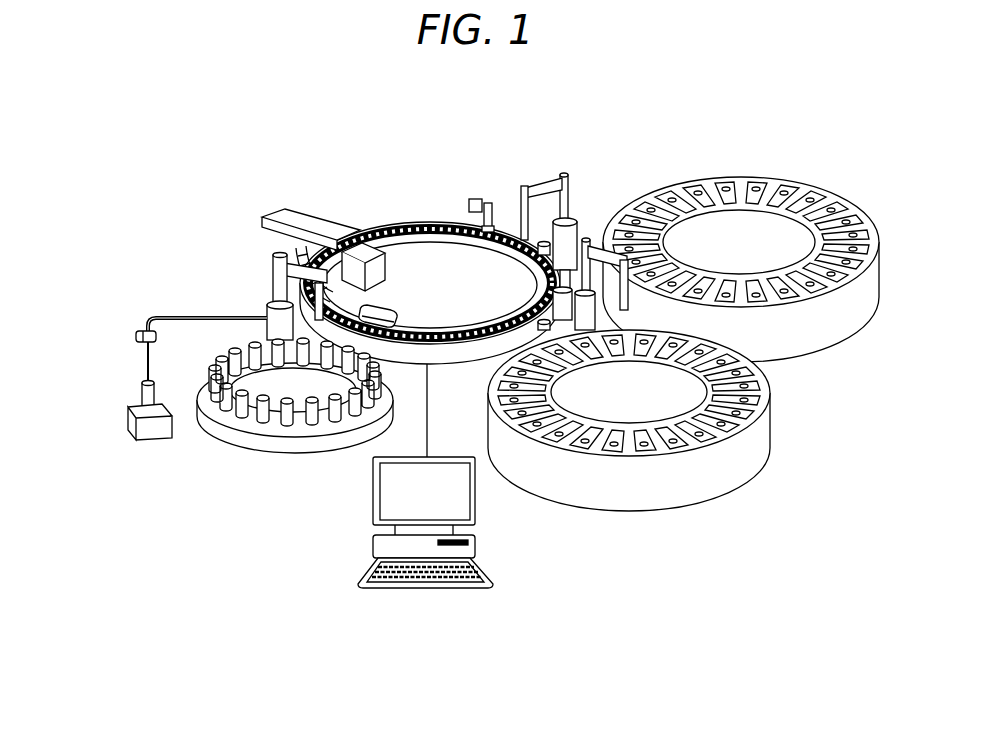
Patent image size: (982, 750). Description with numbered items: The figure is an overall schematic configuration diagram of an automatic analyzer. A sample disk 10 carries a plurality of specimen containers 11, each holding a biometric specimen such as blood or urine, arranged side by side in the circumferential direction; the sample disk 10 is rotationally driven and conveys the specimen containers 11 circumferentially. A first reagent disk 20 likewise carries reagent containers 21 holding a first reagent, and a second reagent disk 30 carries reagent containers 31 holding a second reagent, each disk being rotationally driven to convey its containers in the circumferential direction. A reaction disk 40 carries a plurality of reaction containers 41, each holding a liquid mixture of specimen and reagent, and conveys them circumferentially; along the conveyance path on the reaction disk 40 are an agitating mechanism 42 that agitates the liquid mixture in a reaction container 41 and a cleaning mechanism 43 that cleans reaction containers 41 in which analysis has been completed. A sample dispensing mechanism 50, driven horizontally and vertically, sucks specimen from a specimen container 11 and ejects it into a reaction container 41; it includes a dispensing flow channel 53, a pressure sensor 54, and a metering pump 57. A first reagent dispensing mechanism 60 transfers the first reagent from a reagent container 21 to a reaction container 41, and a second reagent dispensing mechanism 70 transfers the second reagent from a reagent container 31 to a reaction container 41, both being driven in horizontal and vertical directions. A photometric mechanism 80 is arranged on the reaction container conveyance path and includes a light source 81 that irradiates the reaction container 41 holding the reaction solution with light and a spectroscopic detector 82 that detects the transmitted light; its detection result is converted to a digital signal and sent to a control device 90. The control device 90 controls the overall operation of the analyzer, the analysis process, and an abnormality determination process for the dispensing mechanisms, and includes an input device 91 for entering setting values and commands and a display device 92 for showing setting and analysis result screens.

The sample disk 10 is at (295, 434).
The specimen container 11 is at (318, 418).
The first reagent disk 20 is at (741, 221).
The reagent container 21 is at (797, 190).
The second reagent disk 30 is at (643, 447).
The reagent container 31 is at (667, 453).
The reaction disk 40 is at (430, 266).
The reaction container 41 is at (425, 224).
The agitating mechanism 42 is at (483, 200).
The cleaning mechanism 43 is at (400, 316).
The sample dispensing mechanism 50 is at (166, 341).
The dispensing flow channel 53 is at (183, 316).
The pressure sensor 54 is at (136, 336).
The metering pump 57 is at (148, 436).
The first reagent dispensing mechanism 60 is at (549, 165).
The second reagent dispensing mechanism 70 is at (597, 228).
The photometric mechanism 80 is at (323, 209).
The light source 81 is at (373, 227).
The spectroscopic detector 82 is at (307, 222).
The control device 90 is at (402, 529).
The input device 91 is at (488, 568).
The display device 92 is at (455, 494).